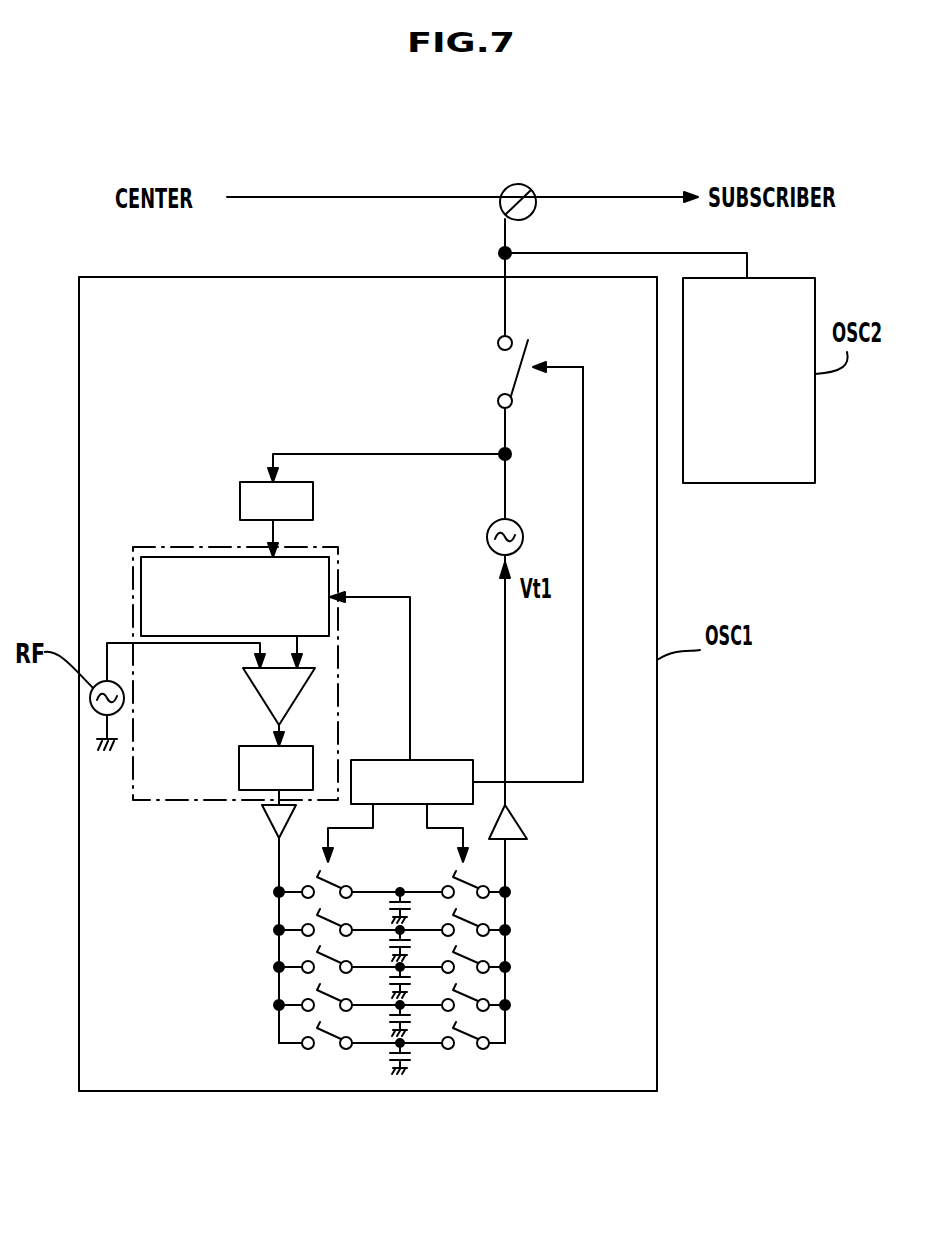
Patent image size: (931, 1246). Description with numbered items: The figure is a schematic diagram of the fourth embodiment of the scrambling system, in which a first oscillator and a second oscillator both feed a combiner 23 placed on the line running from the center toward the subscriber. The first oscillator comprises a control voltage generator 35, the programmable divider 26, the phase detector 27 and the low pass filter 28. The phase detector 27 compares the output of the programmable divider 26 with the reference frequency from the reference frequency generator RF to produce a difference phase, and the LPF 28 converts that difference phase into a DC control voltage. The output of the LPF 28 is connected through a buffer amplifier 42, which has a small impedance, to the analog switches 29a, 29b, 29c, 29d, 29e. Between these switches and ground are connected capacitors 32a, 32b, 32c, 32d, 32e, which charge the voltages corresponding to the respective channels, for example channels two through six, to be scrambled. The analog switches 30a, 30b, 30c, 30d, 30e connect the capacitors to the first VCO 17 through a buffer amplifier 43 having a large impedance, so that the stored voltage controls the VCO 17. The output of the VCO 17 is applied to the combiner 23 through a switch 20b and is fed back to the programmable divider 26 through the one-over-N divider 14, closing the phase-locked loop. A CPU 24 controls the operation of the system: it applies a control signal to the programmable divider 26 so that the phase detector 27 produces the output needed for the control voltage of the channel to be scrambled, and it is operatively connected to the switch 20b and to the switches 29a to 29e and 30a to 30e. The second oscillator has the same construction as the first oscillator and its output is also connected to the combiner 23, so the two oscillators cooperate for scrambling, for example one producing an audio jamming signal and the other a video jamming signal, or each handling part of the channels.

The combiner 23 is at (521, 184).
The switch 20b is at (529, 346).
The first VCO 17 is at (493, 524).
The 1/N divider 14 is at (313, 500).
The programmable divider 26 is at (193, 547).
The control voltage generator 35 is at (338, 565).
The phase detector 27 is at (259, 694).
The low pass filter 28 is at (239, 772).
The CPU 24 is at (437, 760).
The buffer amplifier 42 is at (272, 826).
The buffer amplifier 43 is at (519, 823).
The analog switch 29a is at (316, 877).
The analog switch 29b is at (316, 915).
The analog switch 29c is at (316, 952).
The analog switch 29d is at (316, 990).
The analog switch 29e is at (316, 1028).
The analog switch 30a is at (470, 876).
The analog switch 30b is at (470, 914).
The analog switch 30c is at (470, 951).
The analog switch 30d is at (470, 989).
The analog switch 30e is at (470, 1027).
The capacitor 32a is at (394, 897).
The capacitor 32b is at (393, 937).
The capacitor 32c is at (392, 980).
The capacitor 32d is at (392, 1020).
The capacitor 32e is at (407, 1055).